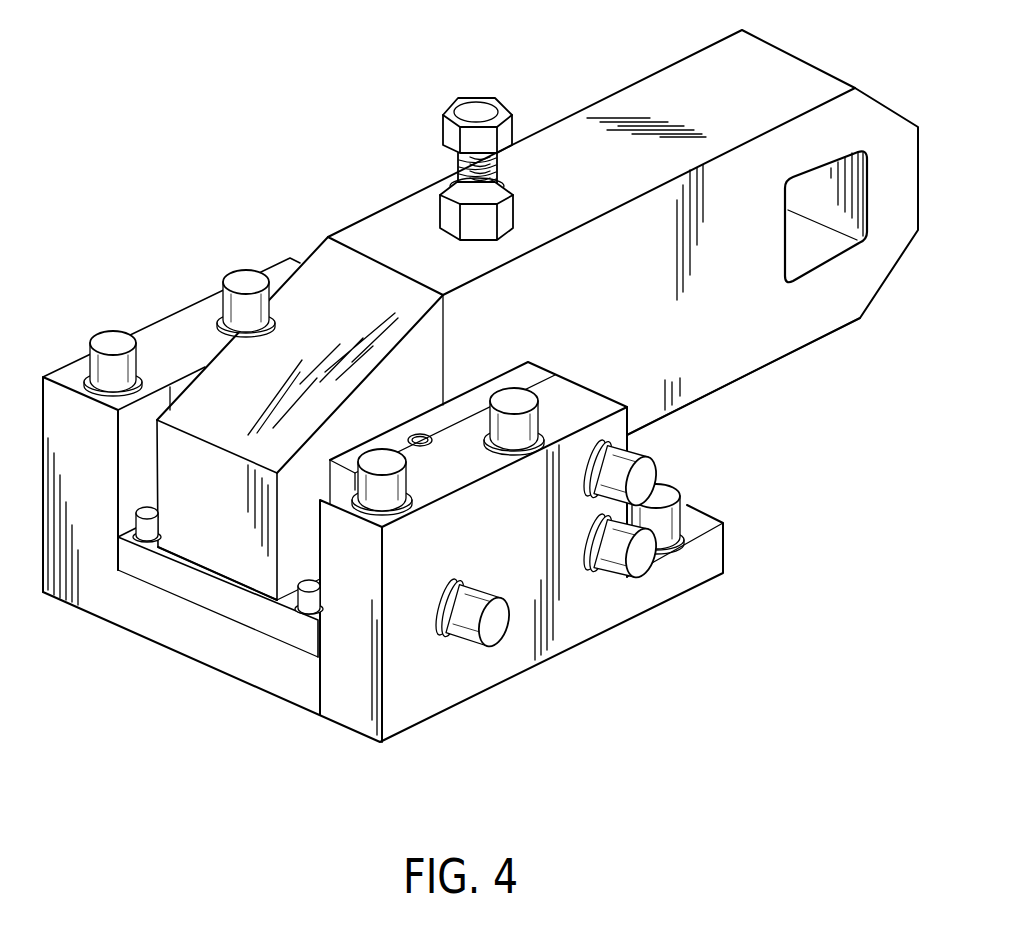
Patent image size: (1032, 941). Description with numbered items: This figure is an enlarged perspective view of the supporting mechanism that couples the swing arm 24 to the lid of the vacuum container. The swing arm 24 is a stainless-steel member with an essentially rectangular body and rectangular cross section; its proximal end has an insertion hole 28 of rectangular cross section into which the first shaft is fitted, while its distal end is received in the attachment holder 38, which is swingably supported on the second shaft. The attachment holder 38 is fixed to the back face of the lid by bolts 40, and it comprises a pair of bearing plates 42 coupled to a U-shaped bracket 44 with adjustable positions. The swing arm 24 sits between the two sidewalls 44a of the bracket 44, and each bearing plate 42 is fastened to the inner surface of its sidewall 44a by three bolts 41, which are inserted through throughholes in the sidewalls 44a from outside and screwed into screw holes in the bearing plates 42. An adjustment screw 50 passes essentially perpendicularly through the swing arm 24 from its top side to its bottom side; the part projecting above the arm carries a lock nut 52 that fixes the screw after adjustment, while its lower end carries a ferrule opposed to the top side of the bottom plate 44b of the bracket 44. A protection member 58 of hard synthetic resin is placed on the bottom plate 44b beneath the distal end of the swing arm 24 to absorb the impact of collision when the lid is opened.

The swing arm 24 is at (655, 100).
The insertion hole 28 is at (802, 188).
The attachment holder 38 is at (573, 620).
The bolts 40 is at (245, 275).
The bolts 41 is at (648, 477).
The bearing plates 42 is at (177, 378).
The U-shaped bracket 44 is at (275, 673).
The sidewall 44a is at (62, 400).
The bottom plate 44b is at (190, 648).
The adjustment screw 50 is at (444, 167).
The lock nut 52 is at (504, 212).
The protection member 58 is at (177, 587).